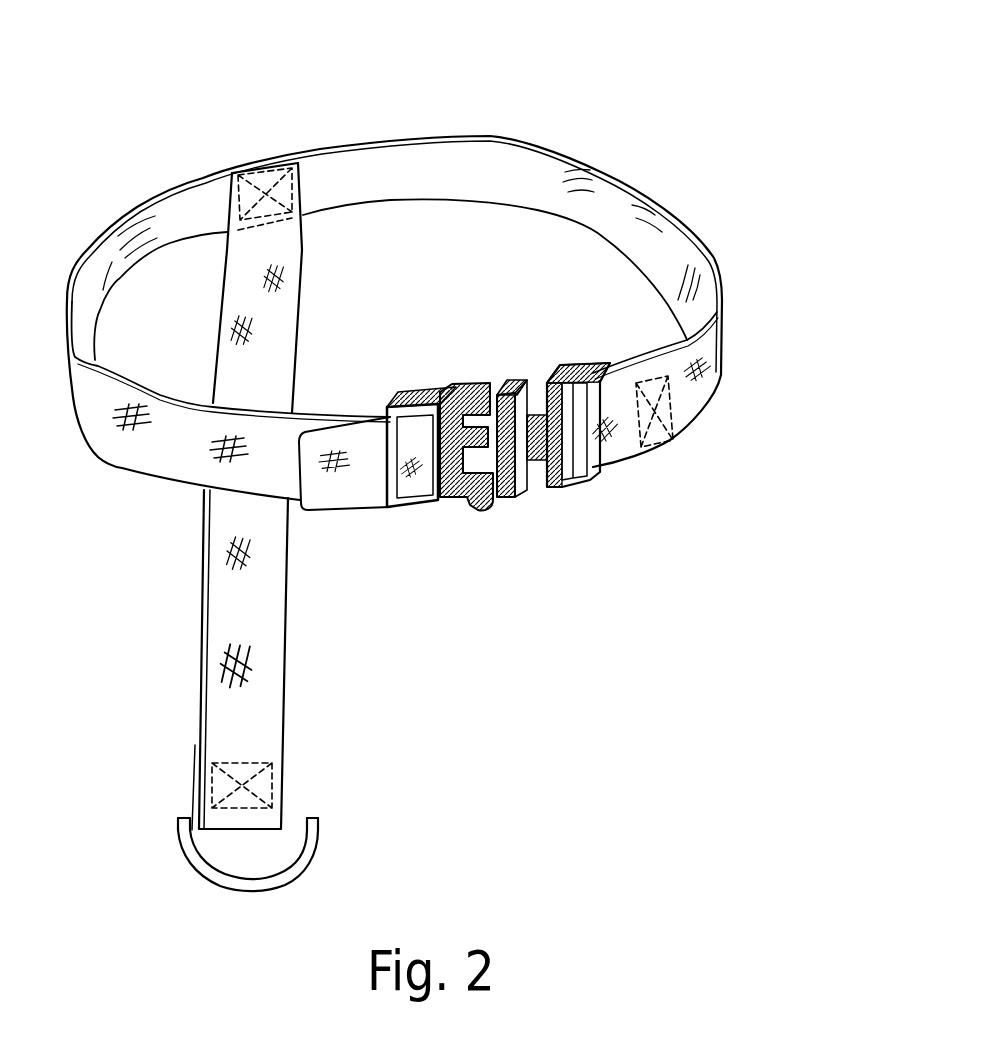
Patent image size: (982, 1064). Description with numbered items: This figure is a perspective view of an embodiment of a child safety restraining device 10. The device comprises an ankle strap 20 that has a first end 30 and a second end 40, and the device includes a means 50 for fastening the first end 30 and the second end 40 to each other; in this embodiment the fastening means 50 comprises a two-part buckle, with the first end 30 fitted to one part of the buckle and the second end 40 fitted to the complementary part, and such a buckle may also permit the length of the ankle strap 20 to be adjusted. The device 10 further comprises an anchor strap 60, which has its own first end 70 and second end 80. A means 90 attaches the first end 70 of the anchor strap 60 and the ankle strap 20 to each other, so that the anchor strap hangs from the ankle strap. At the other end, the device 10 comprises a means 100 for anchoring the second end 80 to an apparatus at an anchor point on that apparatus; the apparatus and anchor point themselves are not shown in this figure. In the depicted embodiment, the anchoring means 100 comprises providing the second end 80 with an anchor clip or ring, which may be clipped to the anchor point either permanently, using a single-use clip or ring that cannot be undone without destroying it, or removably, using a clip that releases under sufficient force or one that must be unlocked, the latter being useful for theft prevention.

The child safety restraining device 10 is at (638, 92).
The ankle strap 20 is at (347, 163).
The first end 30 is at (370, 493).
The second end 40 is at (627, 447).
The means for fastening 50 is at (502, 515).
The anchor strap 60 is at (227, 598).
The first end 70 is at (235, 193).
The second end 80 is at (273, 810).
The means for attaching 90 is at (275, 141).
The means for anchoring 100 is at (347, 856).